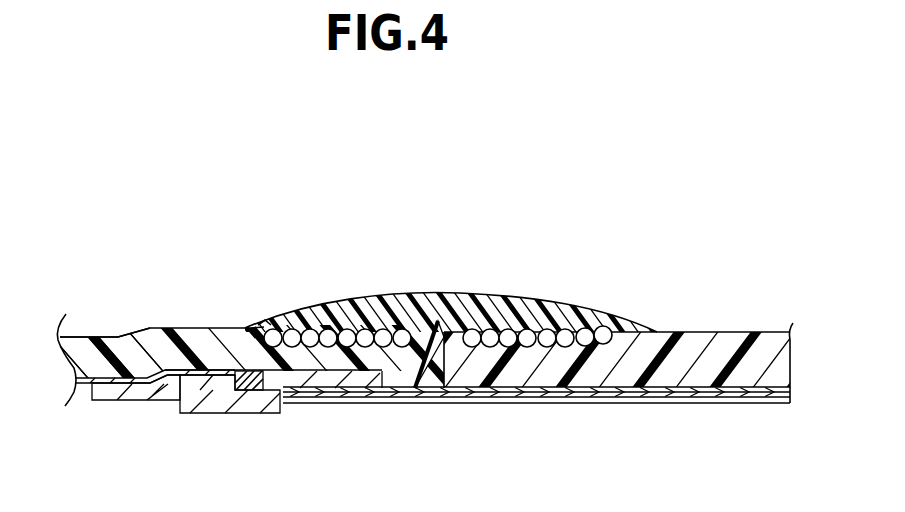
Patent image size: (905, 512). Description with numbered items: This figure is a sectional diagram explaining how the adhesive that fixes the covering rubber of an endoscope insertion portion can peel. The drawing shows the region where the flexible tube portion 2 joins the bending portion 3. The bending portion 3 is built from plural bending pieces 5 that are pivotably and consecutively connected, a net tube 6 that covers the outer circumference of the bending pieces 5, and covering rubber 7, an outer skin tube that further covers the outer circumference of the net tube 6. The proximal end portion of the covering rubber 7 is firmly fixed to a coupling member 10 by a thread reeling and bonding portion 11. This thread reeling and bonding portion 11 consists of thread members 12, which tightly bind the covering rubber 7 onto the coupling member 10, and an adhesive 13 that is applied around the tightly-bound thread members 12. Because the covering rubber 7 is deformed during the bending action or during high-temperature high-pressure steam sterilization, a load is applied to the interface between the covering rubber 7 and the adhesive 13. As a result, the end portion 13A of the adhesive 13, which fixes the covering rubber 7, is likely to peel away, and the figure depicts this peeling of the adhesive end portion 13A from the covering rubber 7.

The flexible tube portion 2 is at (757, 310).
The bending portion 3 is at (154, 290).
The bending pieces 5 is at (116, 400).
The net tube 6 is at (85, 388).
The covering rubber 7 is at (83, 352).
The coupling member 10 is at (240, 413).
The thread reeling and bonding portion 11 is at (436, 253).
The thread members 12 is at (410, 203).
The adhesives 13 is at (399, 298).
The end portion of the adhesive 13A is at (250, 316).